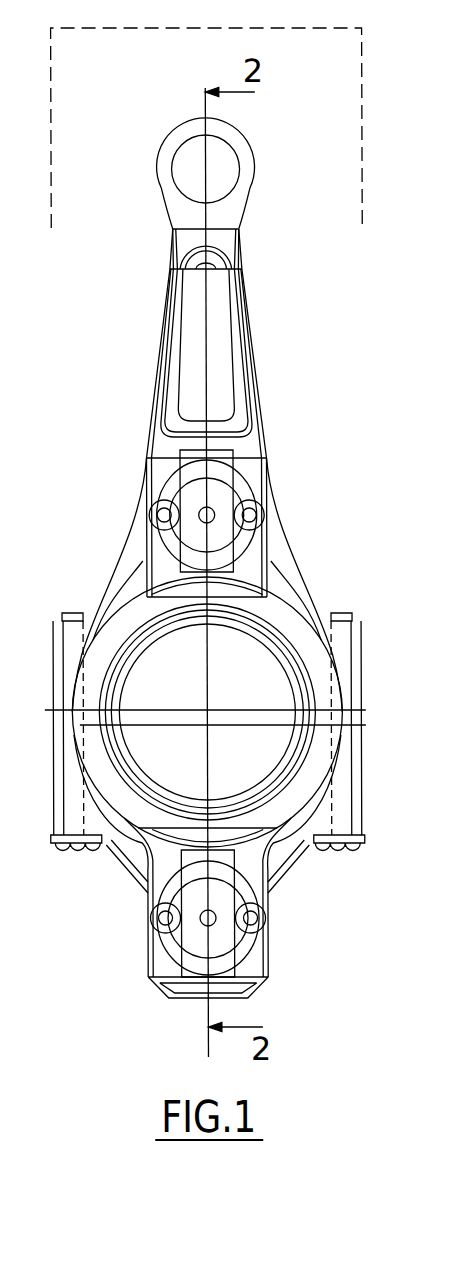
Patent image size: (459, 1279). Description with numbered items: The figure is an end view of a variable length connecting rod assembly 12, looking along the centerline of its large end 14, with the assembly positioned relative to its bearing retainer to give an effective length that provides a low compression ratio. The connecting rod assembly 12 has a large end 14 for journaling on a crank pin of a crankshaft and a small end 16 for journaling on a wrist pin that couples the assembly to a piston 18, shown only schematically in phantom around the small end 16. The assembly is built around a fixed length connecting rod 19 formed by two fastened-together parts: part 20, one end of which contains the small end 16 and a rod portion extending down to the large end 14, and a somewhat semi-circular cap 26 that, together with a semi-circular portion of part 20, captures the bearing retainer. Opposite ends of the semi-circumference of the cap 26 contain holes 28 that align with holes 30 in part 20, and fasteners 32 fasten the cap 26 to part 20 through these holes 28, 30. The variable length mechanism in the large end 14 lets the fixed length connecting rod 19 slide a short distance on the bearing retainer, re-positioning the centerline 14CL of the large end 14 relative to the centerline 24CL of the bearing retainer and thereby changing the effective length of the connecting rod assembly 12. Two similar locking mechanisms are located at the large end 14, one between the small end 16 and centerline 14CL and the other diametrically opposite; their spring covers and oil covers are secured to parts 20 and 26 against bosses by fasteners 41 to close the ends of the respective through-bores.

The variable length connecting rod assembly 12 is at (93, 538).
The large end 14 is at (121, 864).
The small end 16 is at (255, 190).
The piston 18 is at (363, 112).
The fixed length connecting rod 19 is at (260, 385).
The part 20 is at (158, 430).
The cap 26 is at (287, 862).
The holes 28 is at (357, 790).
The holes 30 is at (60, 634).
The fasteners 32 is at (77, 856).
The fasteners 41 is at (248, 512).
The centerline of large end 14CL is at (205, 732).
The centerline of bearing retainer 24CL is at (207, 712).